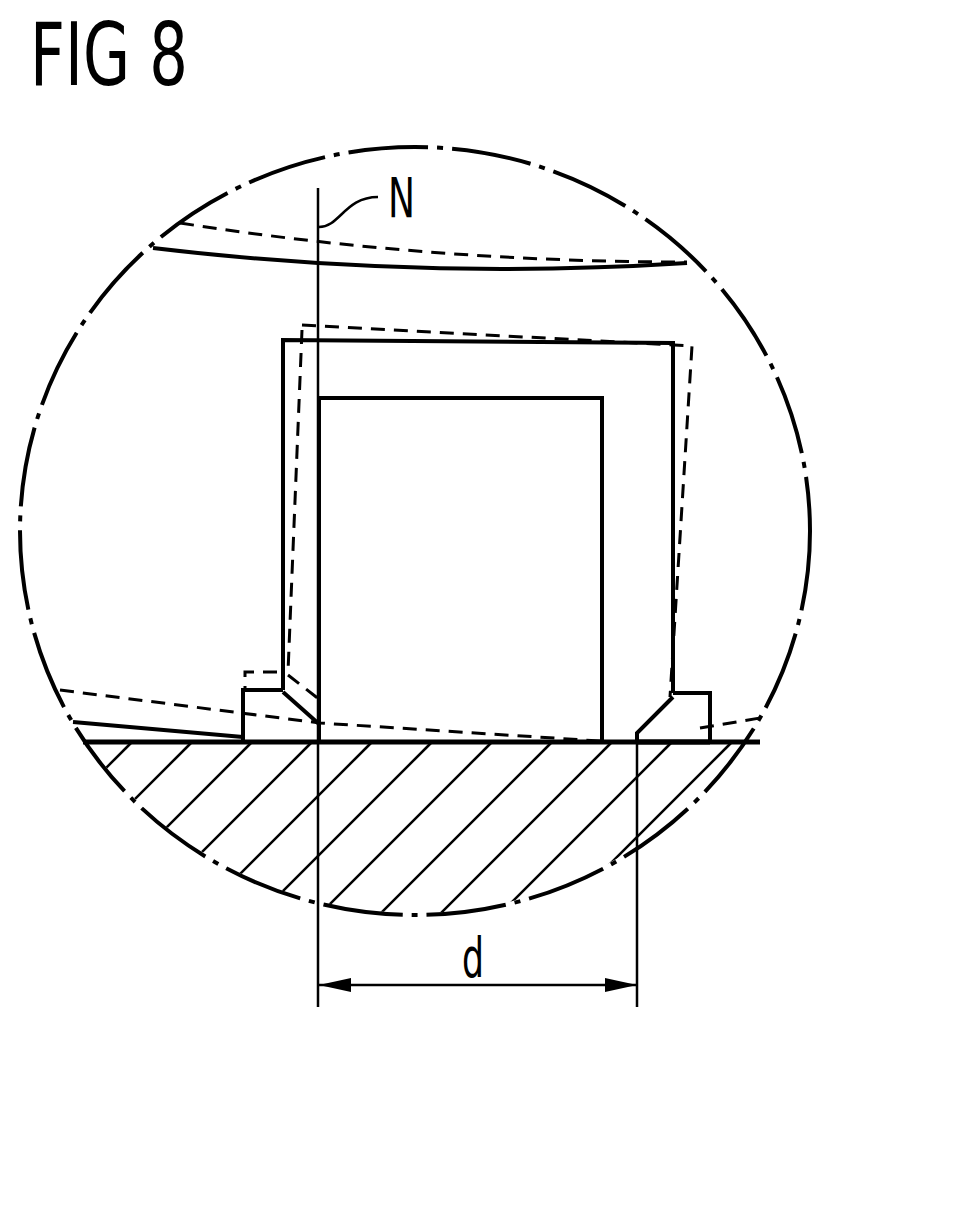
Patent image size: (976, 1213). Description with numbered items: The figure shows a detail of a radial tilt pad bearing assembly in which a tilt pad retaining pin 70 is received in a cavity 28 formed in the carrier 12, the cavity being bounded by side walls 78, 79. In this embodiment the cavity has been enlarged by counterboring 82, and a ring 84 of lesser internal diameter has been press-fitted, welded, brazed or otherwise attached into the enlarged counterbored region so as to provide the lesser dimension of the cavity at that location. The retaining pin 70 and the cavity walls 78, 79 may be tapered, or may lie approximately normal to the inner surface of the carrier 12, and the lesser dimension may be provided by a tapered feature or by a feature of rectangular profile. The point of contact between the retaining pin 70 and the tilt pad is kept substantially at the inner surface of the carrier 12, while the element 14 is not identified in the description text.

The carrier 12 is at (667, 802).
The drum 14 is at (767, 510).
The cavity 28 is at (658, 378).
The retaining pin 70 is at (505, 569).
The cavity wall 78 is at (280, 475).
The cavity wall 79 is at (678, 563).
The counterboring 82 is at (713, 697).
The ring 84 is at (700, 722).